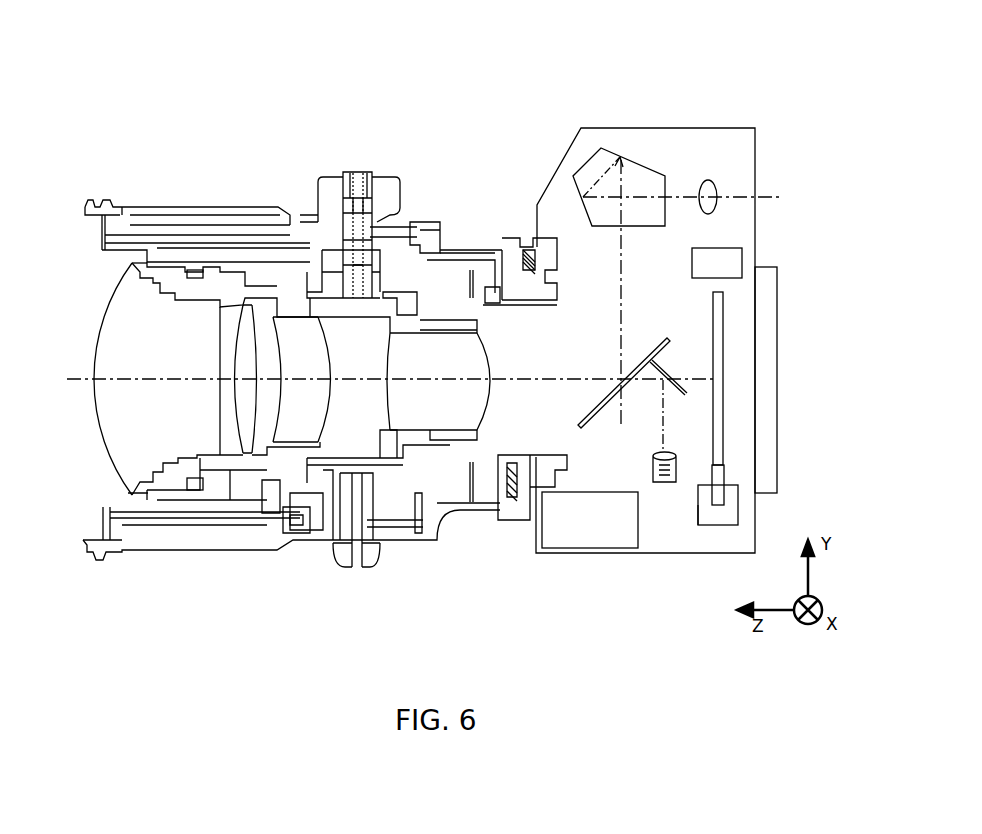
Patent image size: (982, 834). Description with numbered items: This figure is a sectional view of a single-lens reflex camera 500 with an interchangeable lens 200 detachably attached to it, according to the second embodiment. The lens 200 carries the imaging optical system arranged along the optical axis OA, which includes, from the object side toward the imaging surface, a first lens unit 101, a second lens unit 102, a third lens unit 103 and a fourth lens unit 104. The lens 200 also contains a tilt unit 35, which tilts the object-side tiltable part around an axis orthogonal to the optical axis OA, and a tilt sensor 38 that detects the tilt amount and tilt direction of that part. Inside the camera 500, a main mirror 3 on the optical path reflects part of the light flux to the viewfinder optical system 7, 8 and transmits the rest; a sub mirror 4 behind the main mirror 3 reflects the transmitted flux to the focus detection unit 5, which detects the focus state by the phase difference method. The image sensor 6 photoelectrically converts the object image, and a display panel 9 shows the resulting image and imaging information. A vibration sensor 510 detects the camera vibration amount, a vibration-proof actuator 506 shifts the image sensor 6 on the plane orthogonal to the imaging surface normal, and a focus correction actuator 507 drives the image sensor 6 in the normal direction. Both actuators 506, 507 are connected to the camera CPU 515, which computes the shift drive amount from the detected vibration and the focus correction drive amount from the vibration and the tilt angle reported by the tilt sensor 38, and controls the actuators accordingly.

The first lens unit 101 is at (127, 333).
The second lens unit 102 is at (242, 340).
The third lens unit 103 is at (292, 328).
The fourth lens unit 104 is at (488, 345).
The tilt unit 35 is at (318, 222).
The tilt sensor 38 is at (343, 200).
The interchangeable lens 200 is at (407, 213).
The single-lens reflex camera 500 is at (680, 128).
The viewfinder optical system 7 is at (583, 167).
The viewfinder optical system 8 is at (718, 185).
The vibration sensor 510 is at (707, 252).
The display panel 9 is at (770, 317).
The main mirror 3 is at (583, 428).
The sub mirror 4 is at (683, 395).
The focus detection unit 5 is at (652, 475).
The image sensor 6 is at (723, 425).
The vibration-proof actuator 506 is at (698, 507).
The focus correction actuator 507 is at (717, 505).
The camera CPU 515 is at (588, 548).
The optical axis OA is at (72, 381).